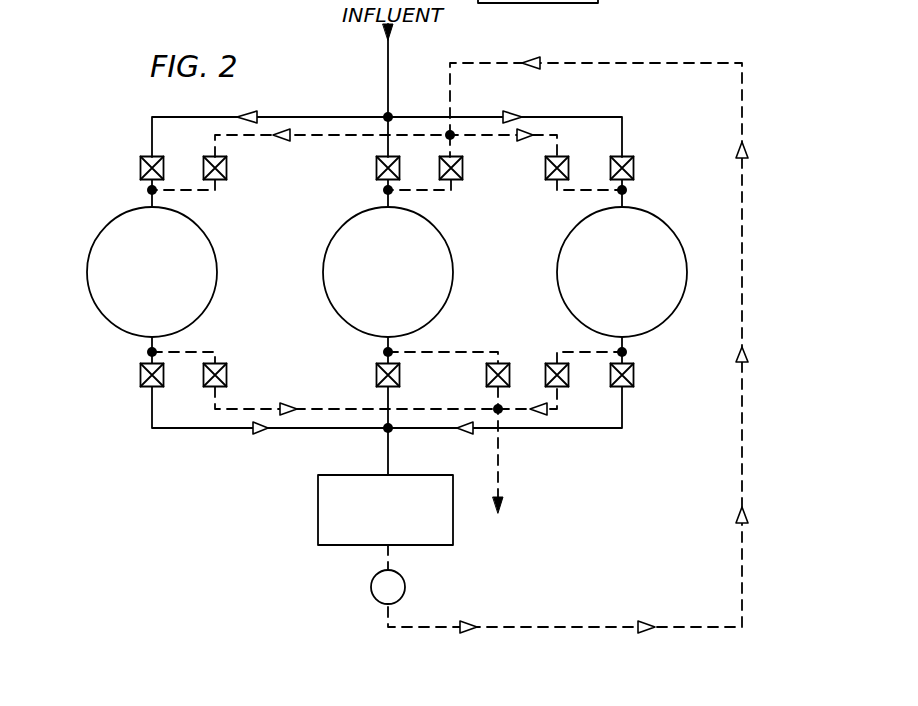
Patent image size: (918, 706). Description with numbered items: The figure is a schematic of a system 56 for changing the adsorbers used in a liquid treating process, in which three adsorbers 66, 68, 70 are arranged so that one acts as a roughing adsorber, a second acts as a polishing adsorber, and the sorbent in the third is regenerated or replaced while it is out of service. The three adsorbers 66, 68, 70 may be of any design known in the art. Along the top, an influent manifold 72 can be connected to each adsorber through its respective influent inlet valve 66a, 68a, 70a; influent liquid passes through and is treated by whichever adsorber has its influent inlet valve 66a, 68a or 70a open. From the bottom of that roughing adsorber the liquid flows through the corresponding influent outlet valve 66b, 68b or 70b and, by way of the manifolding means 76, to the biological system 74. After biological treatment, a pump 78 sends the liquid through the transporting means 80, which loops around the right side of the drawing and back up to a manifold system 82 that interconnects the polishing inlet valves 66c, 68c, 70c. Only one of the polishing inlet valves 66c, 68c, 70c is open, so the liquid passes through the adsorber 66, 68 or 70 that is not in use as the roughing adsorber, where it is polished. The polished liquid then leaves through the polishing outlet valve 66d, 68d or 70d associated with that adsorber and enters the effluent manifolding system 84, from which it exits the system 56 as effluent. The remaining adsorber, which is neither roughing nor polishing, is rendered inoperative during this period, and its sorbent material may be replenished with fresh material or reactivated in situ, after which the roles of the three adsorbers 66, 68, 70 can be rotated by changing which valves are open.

The system 56 is at (100, 132).
The adsorber 66 is at (103, 240).
The influent inlet valve 66a is at (141, 162).
The influent outlet valve 66b is at (140, 373).
The polishing inlet valve 66c is at (227, 168).
The polishing outlet valve 66d is at (227, 375).
The adsorber 68 is at (343, 243).
The influent inlet valve 68a is at (377, 166).
The influent outlet valve 68b is at (376, 378).
The polishing inlet valve 68c is at (482, 180).
The polishing outlet valve 68d is at (487, 378).
The adsorber 70 is at (578, 247).
The influent inlet valve 70a is at (633, 166).
The influent outlet valve 70b is at (632, 378).
The polishing inlet valve 70c is at (547, 168).
The polishing outlet valve 70d is at (545, 372).
The influent manifold 72 is at (333, 117).
The biological system 74 is at (318, 522).
The manifolding means 76 is at (185, 428).
The pump 78 is at (371, 588).
The transporting means 80 is at (742, 545).
The manifold system 82 is at (413, 135).
The effluent manifolding system 84 is at (520, 410).